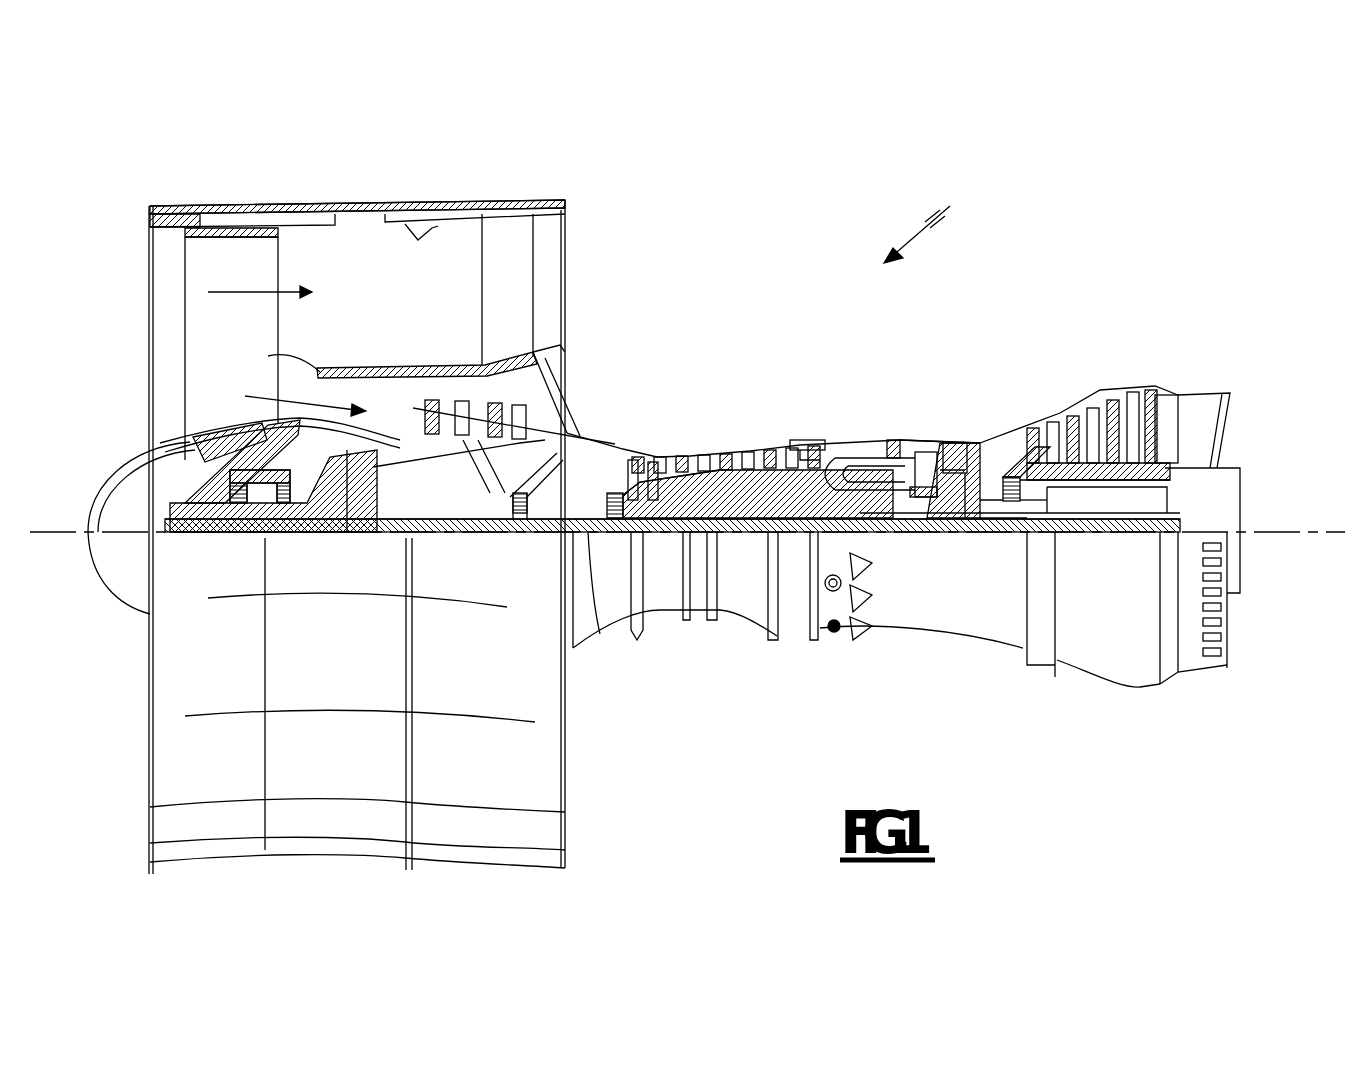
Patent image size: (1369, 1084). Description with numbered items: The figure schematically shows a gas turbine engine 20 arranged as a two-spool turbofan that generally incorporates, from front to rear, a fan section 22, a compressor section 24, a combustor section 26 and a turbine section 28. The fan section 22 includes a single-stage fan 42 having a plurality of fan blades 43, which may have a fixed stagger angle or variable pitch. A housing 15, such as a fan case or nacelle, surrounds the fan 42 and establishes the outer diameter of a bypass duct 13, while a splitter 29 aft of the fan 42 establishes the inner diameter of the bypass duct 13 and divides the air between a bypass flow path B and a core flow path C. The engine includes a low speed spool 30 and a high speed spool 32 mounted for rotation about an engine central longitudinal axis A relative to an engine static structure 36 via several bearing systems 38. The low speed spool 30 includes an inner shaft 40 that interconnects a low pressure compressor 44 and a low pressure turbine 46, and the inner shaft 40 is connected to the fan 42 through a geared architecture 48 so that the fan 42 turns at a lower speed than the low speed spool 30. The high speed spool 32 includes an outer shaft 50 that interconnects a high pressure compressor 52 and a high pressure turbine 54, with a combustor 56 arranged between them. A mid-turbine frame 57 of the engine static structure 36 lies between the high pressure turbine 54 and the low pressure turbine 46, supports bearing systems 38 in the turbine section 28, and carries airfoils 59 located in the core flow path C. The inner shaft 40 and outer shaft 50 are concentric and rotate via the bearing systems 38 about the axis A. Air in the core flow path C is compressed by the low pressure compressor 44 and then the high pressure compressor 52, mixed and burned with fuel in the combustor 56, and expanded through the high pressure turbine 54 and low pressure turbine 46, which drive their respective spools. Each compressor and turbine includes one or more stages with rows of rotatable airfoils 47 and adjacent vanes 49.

The gas turbine engine 20 is at (937, 217).
The fan section 22 is at (265, 187).
The housing 15 is at (357, 218).
The bypass duct 13 is at (427, 232).
The fan 42 is at (247, 358).
The fan blades 43 is at (268, 356).
The splitter 29 is at (318, 380).
The rotatable airfoils 47 is at (425, 400).
The vanes 49 is at (458, 403).
The low pressure compressor 44 is at (545, 376).
The compressor section 24 is at (625, 414).
The high pressure compressor 52 is at (726, 452).
The high speed spool 32 is at (797, 446).
The combustor section 26 is at (878, 395).
The combustor 56 is at (882, 448).
The high pressure turbine 54 is at (960, 445).
The mid-turbine frame 57 is at (1010, 422).
The turbine section 28 is at (1053, 358).
The low pressure turbine 46 is at (1097, 400).
The airfoils 59 is at (1045, 507).
The outer shaft 50 is at (890, 538).
The bearing systems 38 is at (518, 535).
The geared architecture 48 is at (357, 532).
The inner shaft 40 is at (600, 628).
The low speed spool 30 is at (750, 552).
The engine static structure 36 is at (796, 634).
The engine central longitudinal axis A is at (1330, 532).
The bypass flow path B is at (248, 290).
The core flow path C is at (293, 395).